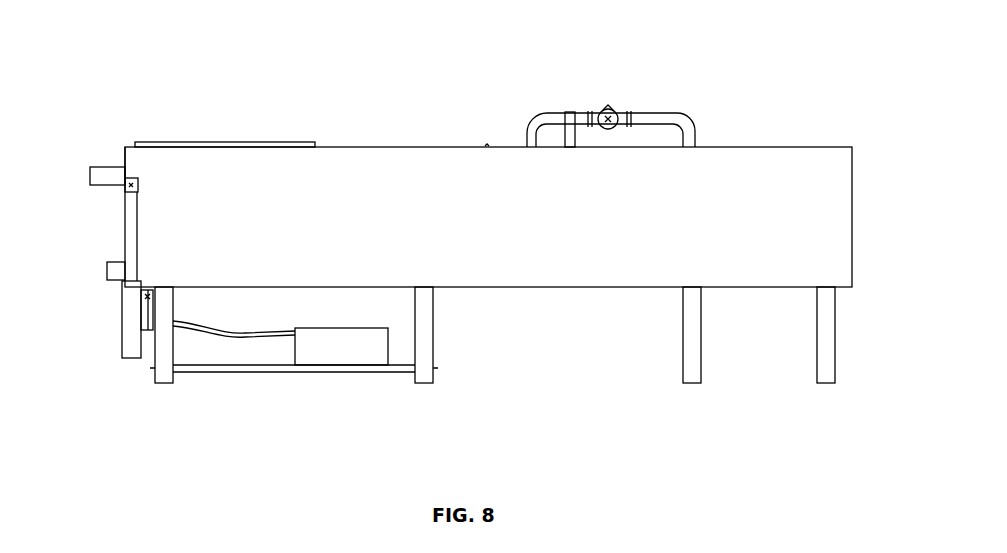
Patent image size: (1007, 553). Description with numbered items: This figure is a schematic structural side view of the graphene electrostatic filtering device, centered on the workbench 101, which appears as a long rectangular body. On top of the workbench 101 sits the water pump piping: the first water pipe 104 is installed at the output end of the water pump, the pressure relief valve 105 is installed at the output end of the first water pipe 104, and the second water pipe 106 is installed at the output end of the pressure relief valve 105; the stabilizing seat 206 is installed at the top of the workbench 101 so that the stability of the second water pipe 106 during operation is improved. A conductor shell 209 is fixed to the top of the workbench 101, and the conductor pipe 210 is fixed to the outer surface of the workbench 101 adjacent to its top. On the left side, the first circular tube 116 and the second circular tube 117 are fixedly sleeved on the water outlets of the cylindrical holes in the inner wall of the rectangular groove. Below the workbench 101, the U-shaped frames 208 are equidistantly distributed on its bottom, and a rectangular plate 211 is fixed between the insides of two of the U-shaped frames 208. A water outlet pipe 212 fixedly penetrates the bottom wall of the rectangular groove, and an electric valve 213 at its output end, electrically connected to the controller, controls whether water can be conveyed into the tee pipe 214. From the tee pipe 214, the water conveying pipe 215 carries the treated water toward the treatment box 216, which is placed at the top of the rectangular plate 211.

The workbench 101 is at (850, 188).
The first water pipe 104 is at (693, 127).
The pressure relief valve 105 is at (610, 108).
The second water pipe 106 is at (535, 115).
The first circular tube 116 is at (92, 173).
The second circular tube 117 is at (113, 272).
The stabilizing seat 206 is at (570, 112).
The U-shaped frame 208 is at (692, 343).
The conductor shell 209 is at (218, 142).
The conductor pipe 210 is at (125, 147).
The rectangular plate 211 is at (403, 375).
The water outlet pipe 212 is at (142, 292).
The electric valve 213 is at (143, 300).
The tee pipe 214 is at (140, 330).
The water conveying pipe 215 is at (203, 328).
The treatment box 216 is at (333, 358).